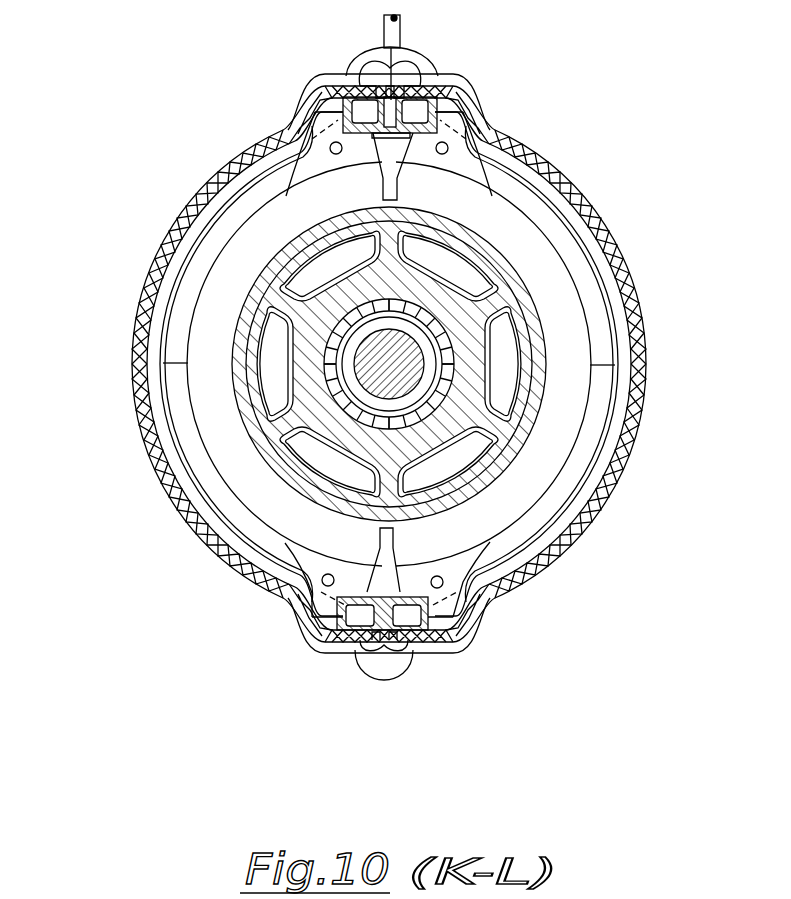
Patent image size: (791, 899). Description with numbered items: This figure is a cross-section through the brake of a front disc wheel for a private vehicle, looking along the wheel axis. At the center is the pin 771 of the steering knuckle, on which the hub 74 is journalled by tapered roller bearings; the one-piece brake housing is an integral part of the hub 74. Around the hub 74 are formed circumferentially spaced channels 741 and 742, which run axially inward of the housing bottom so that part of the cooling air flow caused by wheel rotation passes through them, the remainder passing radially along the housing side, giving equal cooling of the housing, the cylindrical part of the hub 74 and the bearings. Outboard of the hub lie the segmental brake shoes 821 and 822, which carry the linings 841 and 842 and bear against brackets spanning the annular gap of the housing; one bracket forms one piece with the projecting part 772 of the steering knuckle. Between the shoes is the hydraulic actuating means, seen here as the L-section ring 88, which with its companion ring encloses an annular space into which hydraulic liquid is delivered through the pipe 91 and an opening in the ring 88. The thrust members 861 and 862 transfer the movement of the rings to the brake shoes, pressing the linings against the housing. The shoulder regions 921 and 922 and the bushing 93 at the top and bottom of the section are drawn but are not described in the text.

The hub 74 is at (367, 383).
The channels 741 is at (268, 353).
The rotor opening 742 is at (218, 493).
The pin 771 is at (395, 366).
The projecting part 772 is at (390, 607).
The segmental brake shoe 821 is at (283, 578).
The segmental brake shoe 822 is at (463, 582).
The lining 841 is at (243, 252).
The lining 842 is at (552, 272).
The thrust member 861 is at (547, 213).
The thrust member 862 is at (180, 420).
The ring 88 is at (640, 422).
The pipe 91 is at (400, 35).
The housing shoulder 921 is at (283, 137).
The housing shoulder 922 is at (510, 138).
The grommet 93 is at (360, 67).